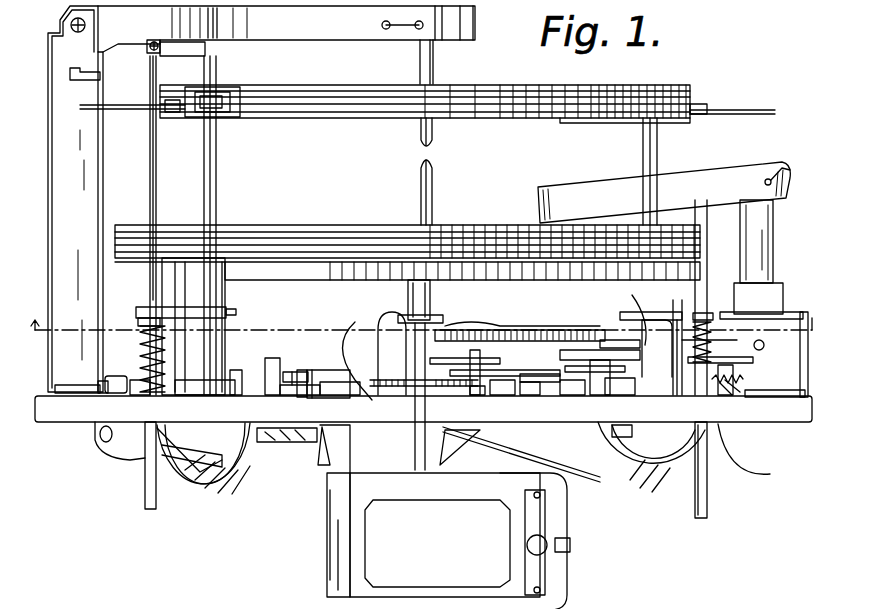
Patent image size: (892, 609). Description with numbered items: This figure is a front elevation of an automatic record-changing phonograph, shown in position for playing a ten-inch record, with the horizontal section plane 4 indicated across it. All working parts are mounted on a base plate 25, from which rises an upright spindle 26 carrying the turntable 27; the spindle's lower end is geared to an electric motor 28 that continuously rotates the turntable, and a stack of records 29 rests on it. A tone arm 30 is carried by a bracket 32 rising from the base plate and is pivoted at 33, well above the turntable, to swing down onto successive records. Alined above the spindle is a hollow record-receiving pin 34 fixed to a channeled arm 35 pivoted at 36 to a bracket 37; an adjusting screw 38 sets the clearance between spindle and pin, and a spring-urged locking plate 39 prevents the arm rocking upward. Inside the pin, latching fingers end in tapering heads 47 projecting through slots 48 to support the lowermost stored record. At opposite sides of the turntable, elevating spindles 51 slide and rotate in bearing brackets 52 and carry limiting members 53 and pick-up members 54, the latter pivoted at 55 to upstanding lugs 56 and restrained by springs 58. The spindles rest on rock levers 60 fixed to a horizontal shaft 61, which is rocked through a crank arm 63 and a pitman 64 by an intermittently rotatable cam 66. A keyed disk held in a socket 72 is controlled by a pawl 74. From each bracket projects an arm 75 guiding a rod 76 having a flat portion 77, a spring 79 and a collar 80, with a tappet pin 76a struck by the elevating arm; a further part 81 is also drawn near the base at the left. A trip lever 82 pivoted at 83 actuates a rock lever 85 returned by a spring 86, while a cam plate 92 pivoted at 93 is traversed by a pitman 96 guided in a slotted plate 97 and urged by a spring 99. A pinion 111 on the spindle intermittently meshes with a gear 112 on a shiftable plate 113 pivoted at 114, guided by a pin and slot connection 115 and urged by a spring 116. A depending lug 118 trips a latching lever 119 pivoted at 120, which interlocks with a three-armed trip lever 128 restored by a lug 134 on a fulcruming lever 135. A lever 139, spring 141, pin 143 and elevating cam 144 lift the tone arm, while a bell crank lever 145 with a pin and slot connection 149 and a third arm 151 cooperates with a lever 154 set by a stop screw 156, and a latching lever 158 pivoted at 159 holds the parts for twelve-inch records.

The section line 4— 4 is at (424, 311).
The base plate 25 is at (66, 423).
The upright spindle 26 is at (433, 185).
The turntable 27 is at (312, 268).
The electric motor 28 is at (444, 517).
The records 29 is at (345, 245).
The tone arm 30 is at (664, 192).
The bracket 32 is at (774, 255).
The pivot 33 is at (779, 170).
The record-receiving pin 34 is at (420, 58).
The vertically-swinging arm 35 is at (286, 29).
The pivot 36 is at (86, 24).
The bracket 37 is at (75, 199).
The adjusting and limiting screw 38 is at (150, 54).
The spring-urged locking plate 39 is at (84, 81).
The downwardly-tapering heads 47 is at (433, 128).
The slots 48 is at (94, 376).
The elevating spindles 51 is at (218, 190).
The bearing brackets 52 is at (228, 376).
The spindle-limiting and clutching members 53 is at (134, 111).
The record pick-up members 54 is at (284, 119).
The pivot 55 is at (216, 93).
The upstanding lugs 56 is at (206, 108).
The spring 58 is at (166, 113).
The rock levers 60 is at (200, 496).
The horizontal shaft 61 is at (296, 444).
The crank arm 63 is at (354, 332).
The link or pitman 64 is at (462, 332).
The cam 66 is at (608, 340).
The socket 72 is at (234, 397).
The pawl 74 is at (188, 397).
The arm 75 is at (145, 307).
The vertically-displaceable rod 76 is at (149, 205).
The tappet pin 76a is at (150, 510).
The flat portion 77 is at (708, 490).
The spring 79 is at (140, 396).
The collar 80 is at (140, 321).
The nut 81 is at (104, 396).
The trip lever 82 is at (175, 272).
The pivot 83 is at (165, 344).
The rock lever 85 is at (250, 386).
The spring 86 is at (272, 397).
The cam plate 92 is at (312, 397).
The pivot 93 is at (295, 364).
The pitman 96 is at (295, 386).
The slotted plate 97 is at (325, 380).
The spring 99 is at (418, 397).
The pinion 111 is at (410, 320).
The gear 112 is at (512, 332).
The shiftable plate 113 is at (481, 397).
The pivot 114 is at (765, 347).
The pin and slot connection 115 is at (505, 386).
The spring 116 is at (534, 397).
The depending lug 118 is at (651, 326).
The latching lever 119 is at (607, 359).
The pivot 120 is at (600, 371).
The trip lever 128 is at (500, 379).
The lug 134 is at (480, 378).
The fulcruming lever 135 is at (530, 384).
The lever 139 is at (675, 397).
The spring 141 is at (777, 408).
The pin 143 is at (618, 397).
The elevating cam 144 is at (725, 397).
The bell crank lever 145 is at (623, 313).
The pin and slot connection 149 is at (737, 330).
The third arm 151 is at (657, 348).
The parallel-swinging lever 154 is at (634, 436).
The stop screw 156 is at (759, 452).
The latching lever 158 is at (570, 397).
The pivot 159 is at (566, 430).